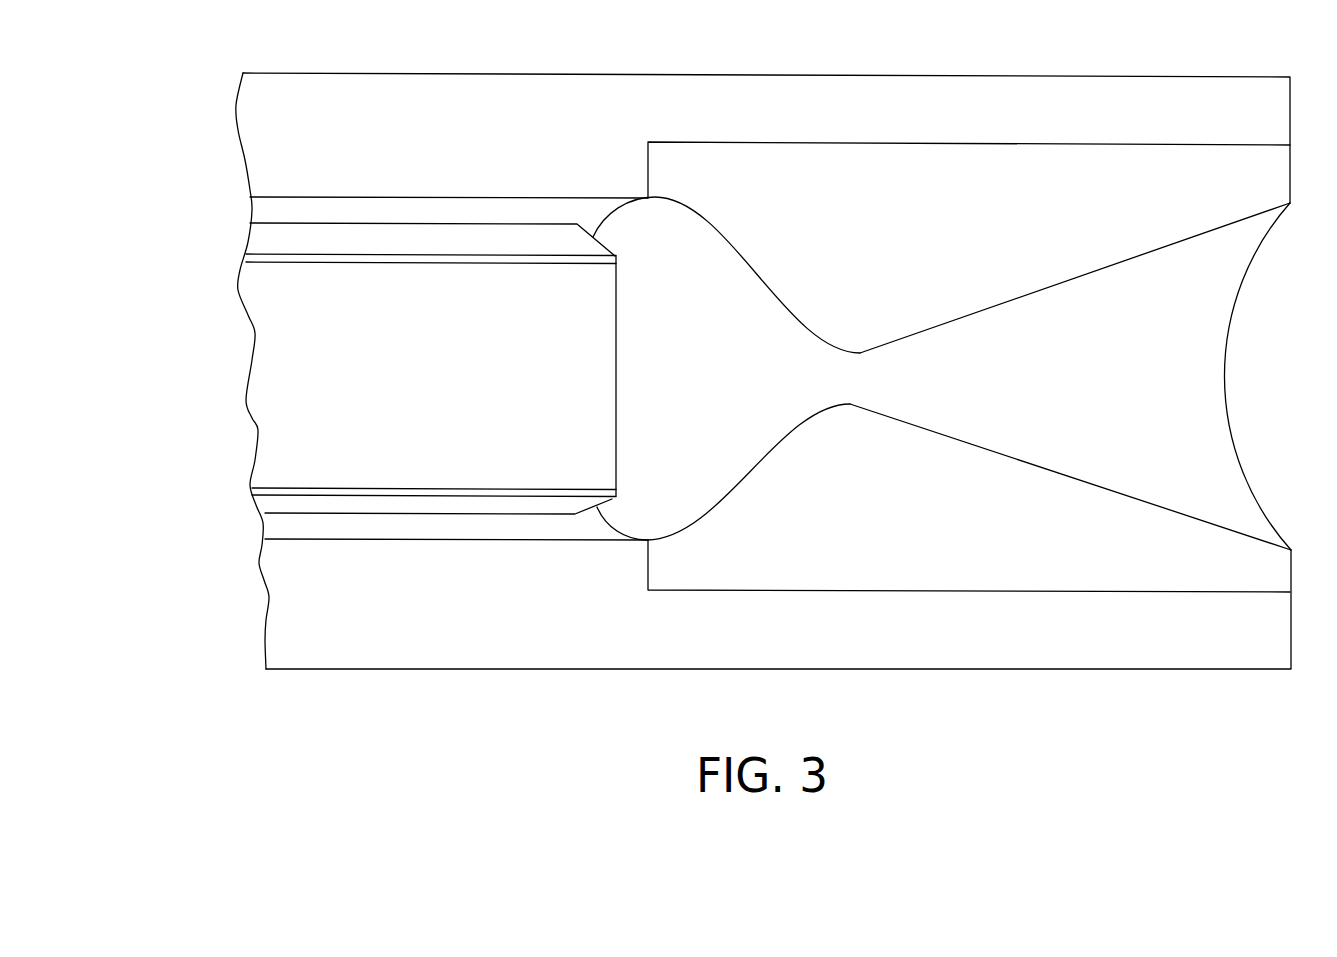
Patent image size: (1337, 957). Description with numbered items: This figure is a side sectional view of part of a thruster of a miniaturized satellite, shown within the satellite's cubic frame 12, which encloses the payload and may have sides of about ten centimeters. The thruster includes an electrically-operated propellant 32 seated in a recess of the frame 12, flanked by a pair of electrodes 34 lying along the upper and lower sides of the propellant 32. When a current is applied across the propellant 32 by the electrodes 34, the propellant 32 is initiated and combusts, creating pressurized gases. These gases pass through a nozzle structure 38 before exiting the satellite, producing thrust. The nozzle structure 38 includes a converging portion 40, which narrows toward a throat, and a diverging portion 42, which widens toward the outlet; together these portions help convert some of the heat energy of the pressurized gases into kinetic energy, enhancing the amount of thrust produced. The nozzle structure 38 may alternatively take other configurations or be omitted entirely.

The cubic frame 12 is at (542, 103).
The electrically-operated propellant 32 is at (290, 333).
The electrodes 34 is at (262, 242).
The nozzle structure 38 is at (893, 83).
The converging portion 40 is at (702, 255).
The diverging portion 42 is at (1218, 242).